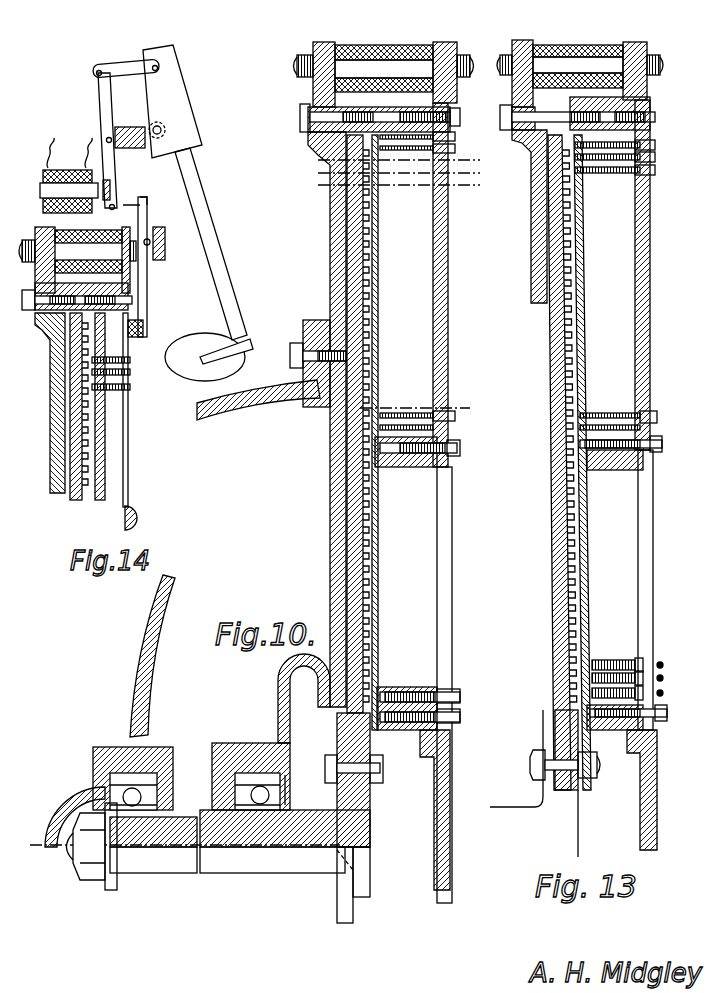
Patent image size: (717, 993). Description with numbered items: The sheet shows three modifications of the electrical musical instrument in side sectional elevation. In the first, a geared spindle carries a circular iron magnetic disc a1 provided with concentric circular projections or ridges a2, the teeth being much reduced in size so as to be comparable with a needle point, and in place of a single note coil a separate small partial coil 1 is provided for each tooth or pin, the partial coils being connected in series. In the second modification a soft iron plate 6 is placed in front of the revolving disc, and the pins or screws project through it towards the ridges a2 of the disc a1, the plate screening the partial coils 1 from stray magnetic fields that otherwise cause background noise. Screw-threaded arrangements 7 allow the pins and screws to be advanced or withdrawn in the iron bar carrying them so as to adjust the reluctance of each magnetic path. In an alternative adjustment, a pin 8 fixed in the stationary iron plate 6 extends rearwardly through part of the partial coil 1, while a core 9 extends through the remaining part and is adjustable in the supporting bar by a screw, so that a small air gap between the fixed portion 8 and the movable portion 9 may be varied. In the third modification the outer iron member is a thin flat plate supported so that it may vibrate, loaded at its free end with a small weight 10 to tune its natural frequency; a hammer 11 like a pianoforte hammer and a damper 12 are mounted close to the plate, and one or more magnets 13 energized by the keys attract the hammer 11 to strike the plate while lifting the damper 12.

In FIG. 10, the partial coil 1 is at (420, 150).
In FIG. 13, the partial coil 1 is at (600, 160).
In FIG. 13, the soft iron plate 6 is at (588, 521).
In FIG. 13, the screw-threaded arrangements 7 is at (630, 162).
In FIG. 13, the pin 8 is at (579, 413).
In FIG. 13, the core 9 is at (628, 418).
In FIG. 14, the weight 10 is at (122, 519).
In FIG. 14, the hammer 11 is at (192, 343).
In FIG. 14, the damper 12 is at (143, 333).
In FIG. 14, the magnet 13 is at (64, 168).
In FIG. 10, the magnetic disc a1 is at (350, 372).
In FIG. 13, the magnetic disc a1 is at (566, 343).
In FIG. 10, the concentric circular projections or ridges a2 is at (358, 303).
In FIG. 13, the concentric circular projections or ridges a2 is at (566, 277).